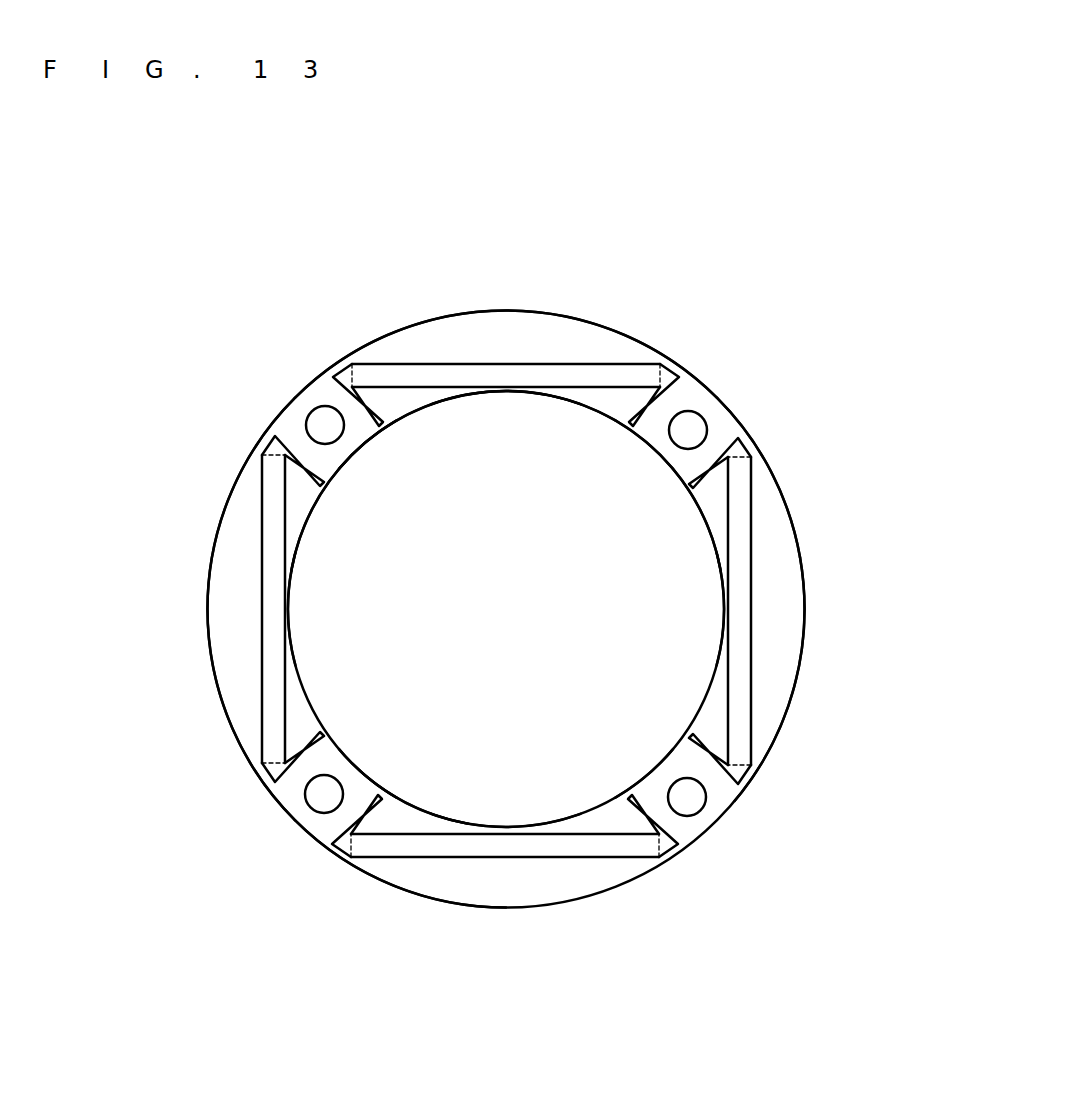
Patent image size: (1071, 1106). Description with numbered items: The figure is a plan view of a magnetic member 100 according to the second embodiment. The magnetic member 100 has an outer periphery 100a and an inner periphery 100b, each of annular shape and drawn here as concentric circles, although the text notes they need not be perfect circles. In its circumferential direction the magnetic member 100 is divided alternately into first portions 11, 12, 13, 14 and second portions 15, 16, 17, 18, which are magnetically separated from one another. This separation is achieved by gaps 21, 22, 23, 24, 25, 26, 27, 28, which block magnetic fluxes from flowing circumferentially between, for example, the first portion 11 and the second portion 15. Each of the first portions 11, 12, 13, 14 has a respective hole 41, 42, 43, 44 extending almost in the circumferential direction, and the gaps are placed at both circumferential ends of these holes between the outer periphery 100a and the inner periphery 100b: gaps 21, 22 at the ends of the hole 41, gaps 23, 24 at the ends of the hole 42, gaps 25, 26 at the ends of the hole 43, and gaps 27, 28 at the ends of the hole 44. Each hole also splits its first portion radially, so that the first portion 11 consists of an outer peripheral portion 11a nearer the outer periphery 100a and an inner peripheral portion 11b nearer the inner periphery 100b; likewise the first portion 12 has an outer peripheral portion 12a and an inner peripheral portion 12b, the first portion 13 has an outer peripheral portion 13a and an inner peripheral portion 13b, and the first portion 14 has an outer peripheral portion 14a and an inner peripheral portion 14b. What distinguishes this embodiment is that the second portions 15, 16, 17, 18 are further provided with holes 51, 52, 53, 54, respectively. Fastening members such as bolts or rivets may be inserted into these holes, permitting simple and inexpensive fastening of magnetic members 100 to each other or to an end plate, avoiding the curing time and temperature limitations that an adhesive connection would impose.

The magnetic member 100 is at (626, 889).
The outer periphery 100a is at (793, 513).
The inner periphery 100b is at (715, 665).
The first portion 11 is at (722, 608).
The outer peripheral portion 11a is at (778, 597).
The inner peripheral portion 11b is at (712, 530).
The first portion 12 is at (522, 393).
The outer peripheral portion 12a is at (445, 325).
The inner peripheral portion 12b is at (440, 400).
The first portion 13 is at (296, 573).
The outer peripheral portion 13a is at (240, 532).
The inner peripheral portion 13b is at (296, 525).
The first portion 14 is at (547, 818).
The outer peripheral portion 14a is at (425, 883).
The inner peripheral portion 14b is at (440, 820).
The second portion 15 is at (675, 455).
The second portion 16 is at (300, 410).
The second portion 17 is at (312, 823).
The second portion 18 is at (700, 823).
The gap 21 is at (730, 775).
The gap 22 is at (740, 445).
The gap 23 is at (672, 380).
The gap 24 is at (343, 372).
The gap 25 is at (278, 445).
The gap 26 is at (265, 775).
The gap 27 is at (343, 840).
The gap 28 is at (690, 835).
The hole 41 is at (735, 680).
The hole 42 is at (512, 375).
The hole 43 is at (275, 597).
The hole 44 is at (541, 848).
The hole 51 is at (698, 422).
The hole 52 is at (335, 438).
The hole 53 is at (330, 785).
The hole 54 is at (670, 785).